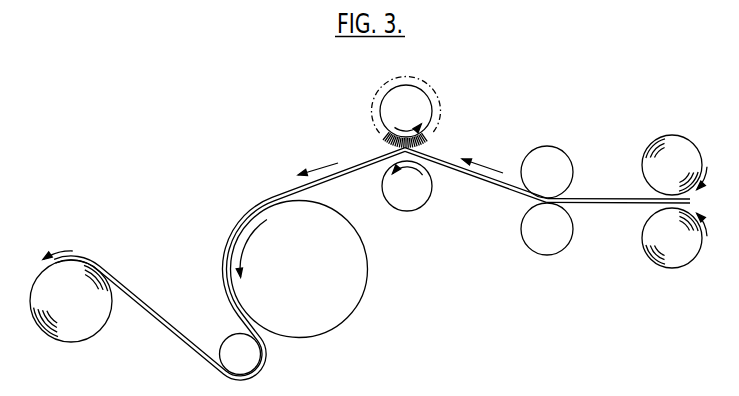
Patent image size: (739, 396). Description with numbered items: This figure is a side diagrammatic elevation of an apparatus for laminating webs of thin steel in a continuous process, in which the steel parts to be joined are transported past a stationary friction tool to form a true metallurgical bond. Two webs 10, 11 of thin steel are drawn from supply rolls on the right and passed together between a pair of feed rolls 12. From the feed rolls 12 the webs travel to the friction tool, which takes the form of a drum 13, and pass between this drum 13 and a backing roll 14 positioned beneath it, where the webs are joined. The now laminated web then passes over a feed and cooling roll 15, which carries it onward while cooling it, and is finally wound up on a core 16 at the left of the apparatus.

The web of thin steel 10 is at (625, 208).
The web of thin steel 11 is at (627, 197).
The feed rolls 12 is at (558, 160).
The drum 13 is at (437, 90).
The backing roll 14 is at (410, 198).
The feed and cooling roll 15 is at (347, 295).
The core 16 is at (92, 322).